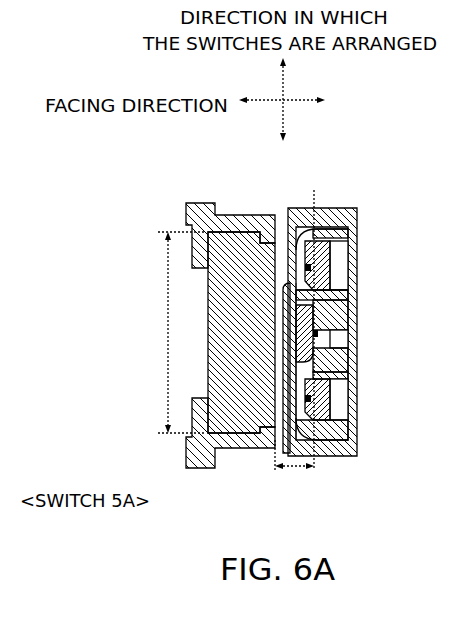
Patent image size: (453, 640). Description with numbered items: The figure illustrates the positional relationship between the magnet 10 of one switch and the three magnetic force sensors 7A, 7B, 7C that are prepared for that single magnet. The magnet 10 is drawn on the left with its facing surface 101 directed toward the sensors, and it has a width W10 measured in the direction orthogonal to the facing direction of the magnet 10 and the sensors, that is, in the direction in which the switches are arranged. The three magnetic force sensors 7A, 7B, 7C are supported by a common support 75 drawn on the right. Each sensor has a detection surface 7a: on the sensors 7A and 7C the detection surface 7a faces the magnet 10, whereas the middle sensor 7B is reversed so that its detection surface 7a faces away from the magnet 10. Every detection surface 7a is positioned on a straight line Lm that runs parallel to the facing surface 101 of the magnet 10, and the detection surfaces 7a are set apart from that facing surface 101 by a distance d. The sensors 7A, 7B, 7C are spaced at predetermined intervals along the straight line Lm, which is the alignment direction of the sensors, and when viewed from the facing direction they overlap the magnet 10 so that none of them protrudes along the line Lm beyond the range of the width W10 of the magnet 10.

The magnet 10 is at (241, 332).
The facing surface 101 is at (202, 414).
The detection surface 7a is at (305, 268).
The magnetic force sensor 7A is at (346, 265).
The reversed magnetic force sensor 7B is at (347, 330).
The magnetic force sensor 7C is at (347, 396).
The common support 75 is at (353, 208).
The width of the magnet W10 is at (159, 332).
The straight line Lm is at (318, 318).
The distance d is at (294, 470).